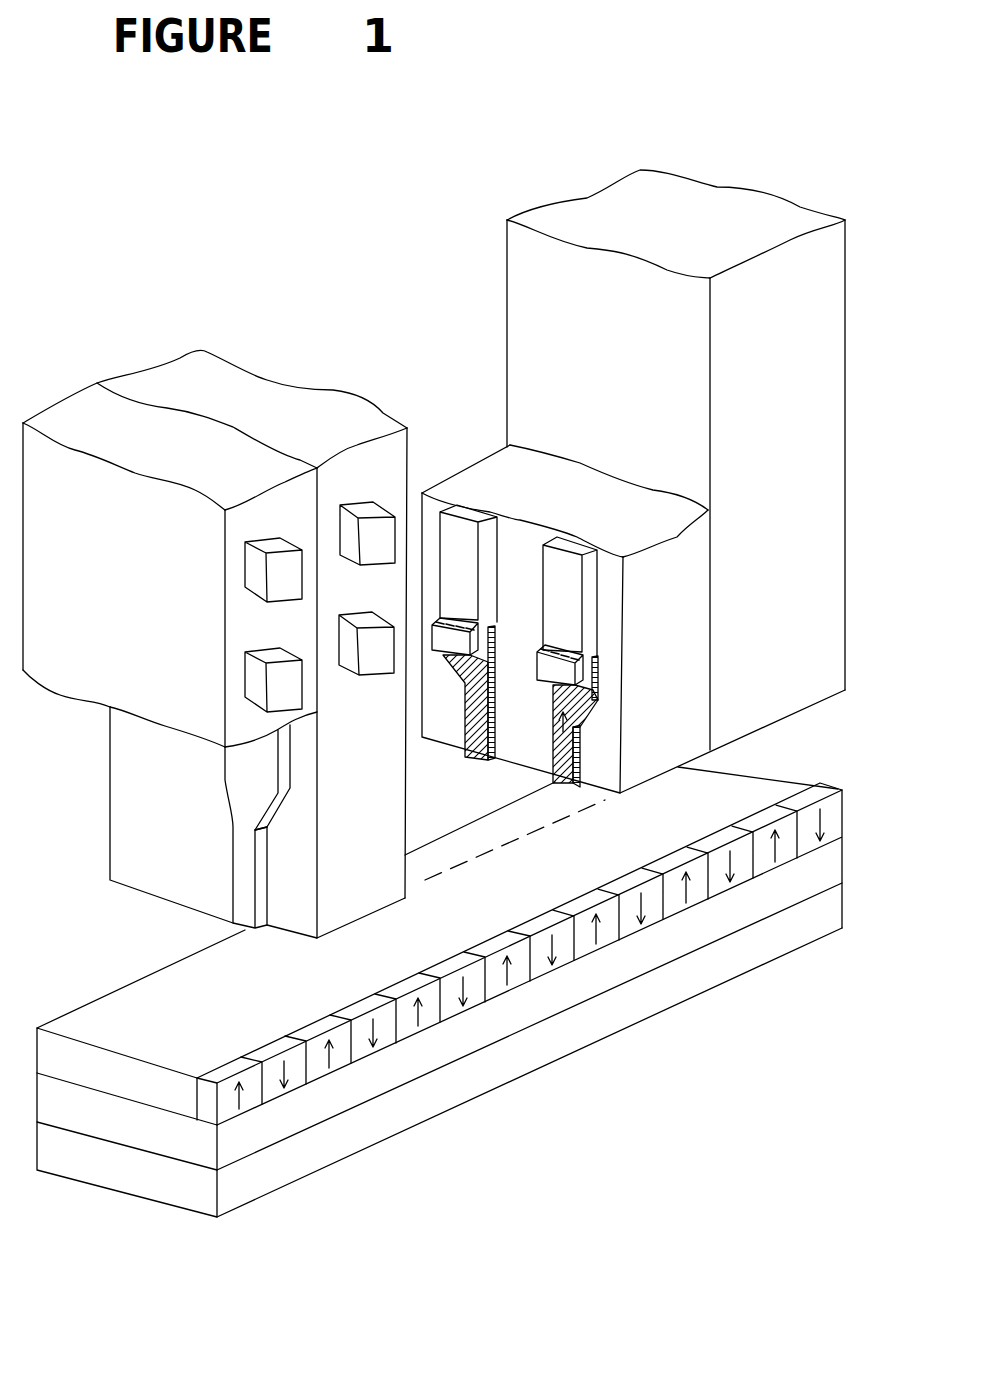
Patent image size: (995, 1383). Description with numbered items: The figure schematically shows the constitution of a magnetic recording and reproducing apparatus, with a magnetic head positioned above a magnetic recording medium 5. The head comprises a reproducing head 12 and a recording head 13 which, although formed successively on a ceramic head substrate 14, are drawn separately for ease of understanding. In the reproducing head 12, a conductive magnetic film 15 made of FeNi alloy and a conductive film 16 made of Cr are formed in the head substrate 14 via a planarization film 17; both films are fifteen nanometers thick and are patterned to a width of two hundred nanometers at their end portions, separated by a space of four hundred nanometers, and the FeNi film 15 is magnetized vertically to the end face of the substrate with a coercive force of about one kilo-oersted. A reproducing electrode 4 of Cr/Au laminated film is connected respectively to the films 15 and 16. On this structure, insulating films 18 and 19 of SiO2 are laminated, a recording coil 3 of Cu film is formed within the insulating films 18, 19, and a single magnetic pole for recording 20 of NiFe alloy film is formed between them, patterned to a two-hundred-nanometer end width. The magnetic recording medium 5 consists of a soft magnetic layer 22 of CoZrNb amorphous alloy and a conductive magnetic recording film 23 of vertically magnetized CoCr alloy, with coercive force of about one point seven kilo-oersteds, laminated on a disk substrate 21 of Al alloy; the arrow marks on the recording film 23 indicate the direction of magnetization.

The recording coil 3 is at (380, 513).
The reproducing electrode 4 is at (490, 553).
The magnetic recording medium 5 is at (172, 1187).
The reproducing head 12 is at (478, 490).
The recording head 13 is at (80, 425).
The head substrate 14 is at (597, 230).
The conductive magnetic film 15 is at (565, 780).
The conductive film 16 is at (473, 743).
The planarization film 17 is at (515, 470).
The insulating film 18 is at (233, 397).
The insulating film 19 is at (117, 418).
The single magnetic pole for recording 20 is at (230, 877).
The disk substrate 21 is at (117, 1173).
The soft magnetic layer 22 is at (68, 1112).
The conductive magnetic recording film 23 is at (75, 1062).